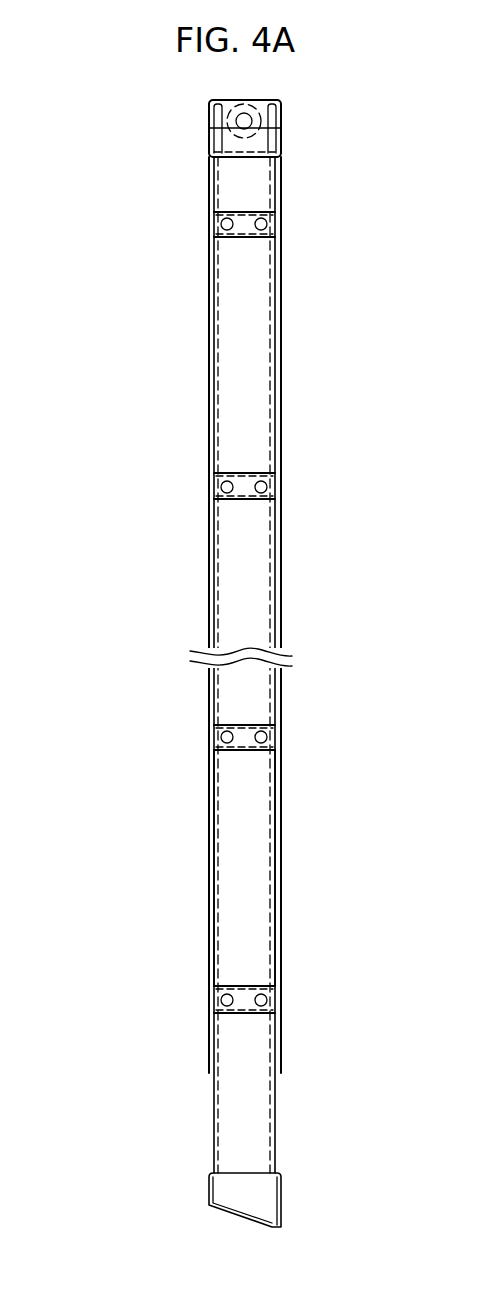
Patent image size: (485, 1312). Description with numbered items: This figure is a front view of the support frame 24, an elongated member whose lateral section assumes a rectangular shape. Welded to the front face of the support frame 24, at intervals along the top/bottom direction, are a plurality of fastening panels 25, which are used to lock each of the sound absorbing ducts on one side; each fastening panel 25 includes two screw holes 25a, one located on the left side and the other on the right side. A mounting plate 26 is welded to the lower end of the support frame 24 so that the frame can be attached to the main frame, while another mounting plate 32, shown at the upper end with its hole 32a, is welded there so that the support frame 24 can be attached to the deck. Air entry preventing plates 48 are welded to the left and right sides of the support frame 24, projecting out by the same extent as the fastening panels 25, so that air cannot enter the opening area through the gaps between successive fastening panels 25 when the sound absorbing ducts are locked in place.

The support frame 24 is at (288, 381).
The fastening panel 25 is at (198, 742).
The screw hole 25a is at (256, 484).
The mounting plate 26 is at (283, 1198).
The mounting plate 32 is at (222, 129).
The cap hole 32a is at (247, 120).
The air entry preventing plate 48 is at (208, 845).